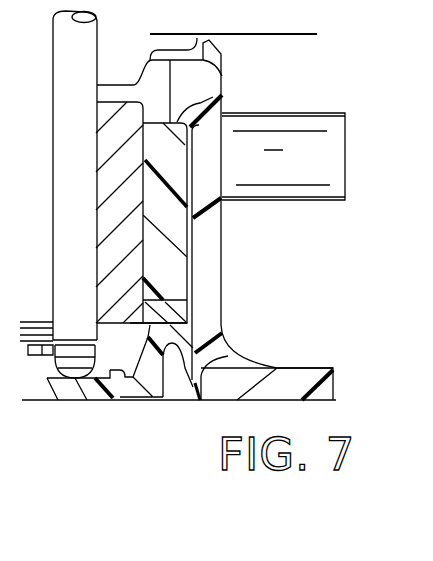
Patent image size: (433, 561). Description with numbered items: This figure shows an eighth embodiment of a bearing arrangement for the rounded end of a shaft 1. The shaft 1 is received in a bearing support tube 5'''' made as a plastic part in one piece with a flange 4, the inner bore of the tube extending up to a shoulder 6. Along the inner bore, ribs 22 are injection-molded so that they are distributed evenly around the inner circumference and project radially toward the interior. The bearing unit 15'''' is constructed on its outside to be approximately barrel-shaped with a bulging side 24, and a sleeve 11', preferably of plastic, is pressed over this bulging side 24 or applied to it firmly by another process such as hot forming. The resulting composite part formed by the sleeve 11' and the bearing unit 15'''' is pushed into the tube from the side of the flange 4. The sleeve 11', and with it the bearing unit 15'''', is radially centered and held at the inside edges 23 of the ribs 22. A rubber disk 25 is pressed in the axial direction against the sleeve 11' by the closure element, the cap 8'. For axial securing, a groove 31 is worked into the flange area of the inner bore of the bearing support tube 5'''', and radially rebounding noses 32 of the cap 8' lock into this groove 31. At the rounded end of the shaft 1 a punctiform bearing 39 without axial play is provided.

The shaft 1 is at (88, 46).
The shoulder 6 is at (222, 92).
The bearing support tube 5'''' is at (225, 103).
The bulging side 24 is at (138, 190).
The inside edges 23 is at (196, 216).
The ribs 22 is at (183, 247).
The sleeve 11' is at (235, 252).
The bearing unit 15'''' is at (199, 276).
The rubber disk 25 is at (180, 312).
The groove 31 is at (228, 346).
The flange 4 is at (335, 390).
The punctiform bearing 39 is at (88, 383).
The cap 8' is at (151, 380).
The noses 32 is at (196, 400).